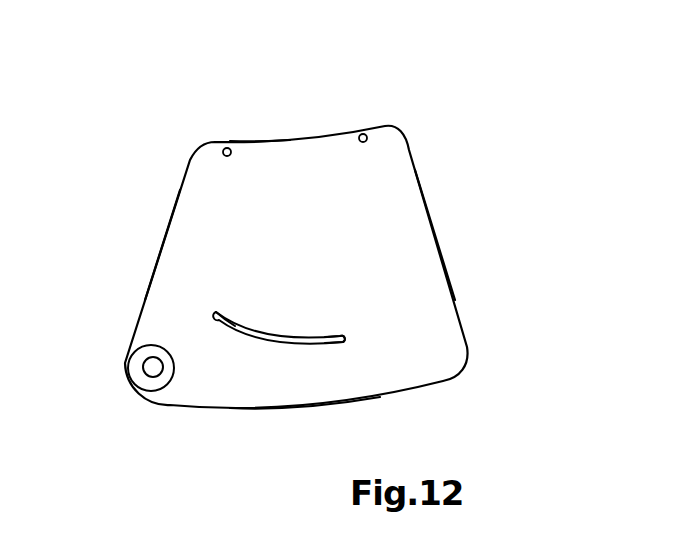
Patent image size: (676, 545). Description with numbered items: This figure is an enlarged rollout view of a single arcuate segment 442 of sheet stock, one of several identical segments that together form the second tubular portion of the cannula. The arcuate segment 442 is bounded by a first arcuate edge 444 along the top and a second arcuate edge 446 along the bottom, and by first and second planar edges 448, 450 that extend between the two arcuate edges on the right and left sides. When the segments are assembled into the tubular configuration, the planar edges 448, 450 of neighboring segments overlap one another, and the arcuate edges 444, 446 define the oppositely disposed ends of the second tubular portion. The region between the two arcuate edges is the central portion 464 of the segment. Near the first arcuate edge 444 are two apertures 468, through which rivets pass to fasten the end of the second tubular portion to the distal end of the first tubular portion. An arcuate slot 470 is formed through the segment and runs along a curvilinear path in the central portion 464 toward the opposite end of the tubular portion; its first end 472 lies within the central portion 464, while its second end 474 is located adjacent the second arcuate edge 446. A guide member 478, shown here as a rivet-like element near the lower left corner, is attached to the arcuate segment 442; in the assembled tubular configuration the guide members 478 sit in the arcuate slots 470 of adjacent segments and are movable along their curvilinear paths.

The arcuate segment 442 is at (293, 175).
The first arcuate edge 444 is at (257, 140).
The second arcuate edge 446 is at (273, 408).
The first planar edge 448 is at (430, 210).
The second planar edge 450 is at (160, 247).
The central portion 464 is at (232, 223).
The apertures 468 is at (226, 148).
The arcuate slot 470 is at (272, 338).
The first end of arcuate slot 472 is at (213, 318).
The second end of arcuate slot 474 is at (345, 338).
The guide member 478 is at (153, 367).